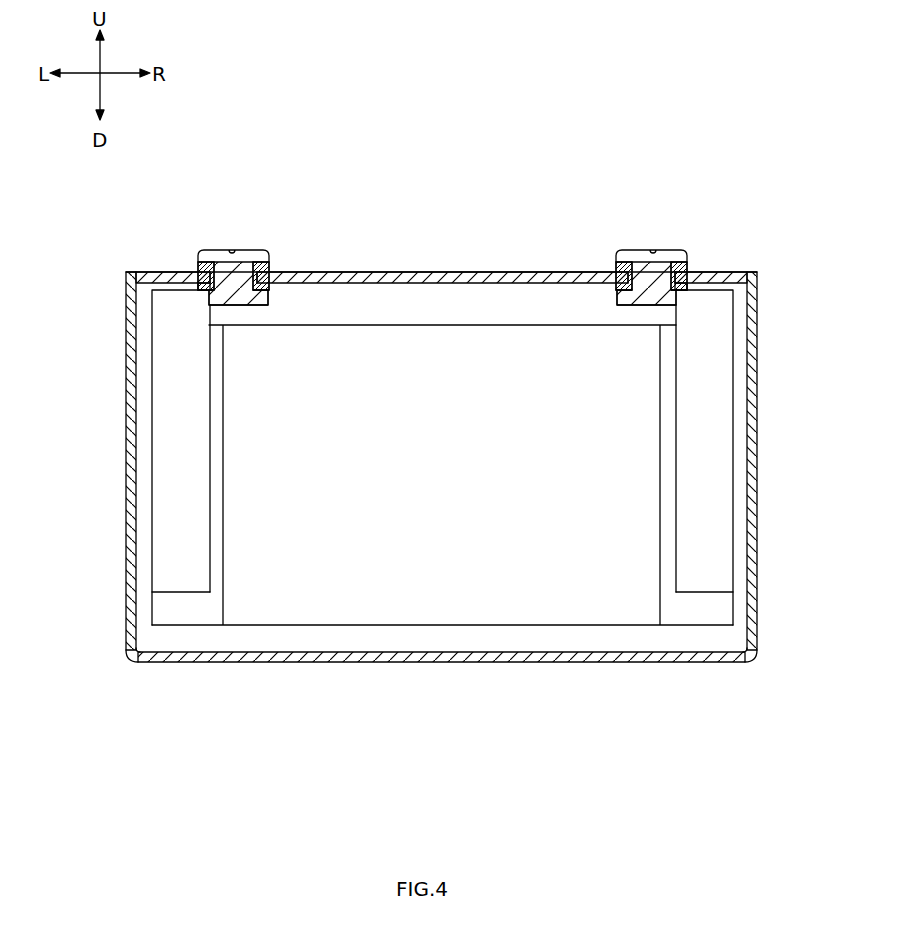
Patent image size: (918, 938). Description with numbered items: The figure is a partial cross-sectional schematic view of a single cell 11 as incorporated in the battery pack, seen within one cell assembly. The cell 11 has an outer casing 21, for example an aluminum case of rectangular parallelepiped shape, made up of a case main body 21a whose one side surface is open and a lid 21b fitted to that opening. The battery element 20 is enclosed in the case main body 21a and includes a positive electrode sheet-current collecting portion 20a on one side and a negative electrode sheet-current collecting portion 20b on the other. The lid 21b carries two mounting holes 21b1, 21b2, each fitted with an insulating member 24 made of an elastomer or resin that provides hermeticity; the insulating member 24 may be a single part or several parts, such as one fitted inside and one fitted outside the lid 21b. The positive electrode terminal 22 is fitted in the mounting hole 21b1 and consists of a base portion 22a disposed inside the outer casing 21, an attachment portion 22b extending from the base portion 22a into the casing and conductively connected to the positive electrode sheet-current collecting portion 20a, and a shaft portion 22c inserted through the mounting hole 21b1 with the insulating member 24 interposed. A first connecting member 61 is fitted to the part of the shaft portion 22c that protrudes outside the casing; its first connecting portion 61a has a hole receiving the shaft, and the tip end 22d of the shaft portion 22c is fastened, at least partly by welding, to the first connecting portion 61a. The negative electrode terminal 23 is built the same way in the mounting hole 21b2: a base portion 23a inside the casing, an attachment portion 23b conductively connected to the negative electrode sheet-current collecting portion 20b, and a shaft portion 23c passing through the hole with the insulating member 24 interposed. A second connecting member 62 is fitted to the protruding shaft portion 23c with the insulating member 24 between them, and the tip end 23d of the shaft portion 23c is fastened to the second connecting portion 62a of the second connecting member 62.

The cell 11 is at (399, 442).
The battery element 20 is at (442, 476).
The positive electrode sheet-current collecting portion 20a is at (698, 616).
The negative electrode sheet-current collecting portion 20b is at (186, 616).
The outer casing 21 is at (399, 414).
The case main body 21a is at (127, 545).
The lid 21b is at (441, 288).
The mounting hole 21b1 is at (650, 288).
The mounting hole 21b2 is at (236, 288).
The positive electrode terminal 22 is at (676, 398).
The base portion 22a is at (630, 306).
The attachment portion 22b is at (665, 501).
The shaft portion 22c is at (688, 275).
The tip end 22d is at (680, 250).
The negative electrode terminal 23 is at (225, 395).
The base portion 23a is at (255, 306).
The attachment portion 23b is at (220, 501).
The shaft portion 23c is at (264, 268).
The tip end 23d is at (207, 250).
The insulating member 24 is at (197, 270).
The first connecting member 61 is at (688, 262).
The first connecting portion 61a is at (670, 262).
The second connecting member 62 is at (197, 259).
The second connecting portion 62a is at (211, 262).